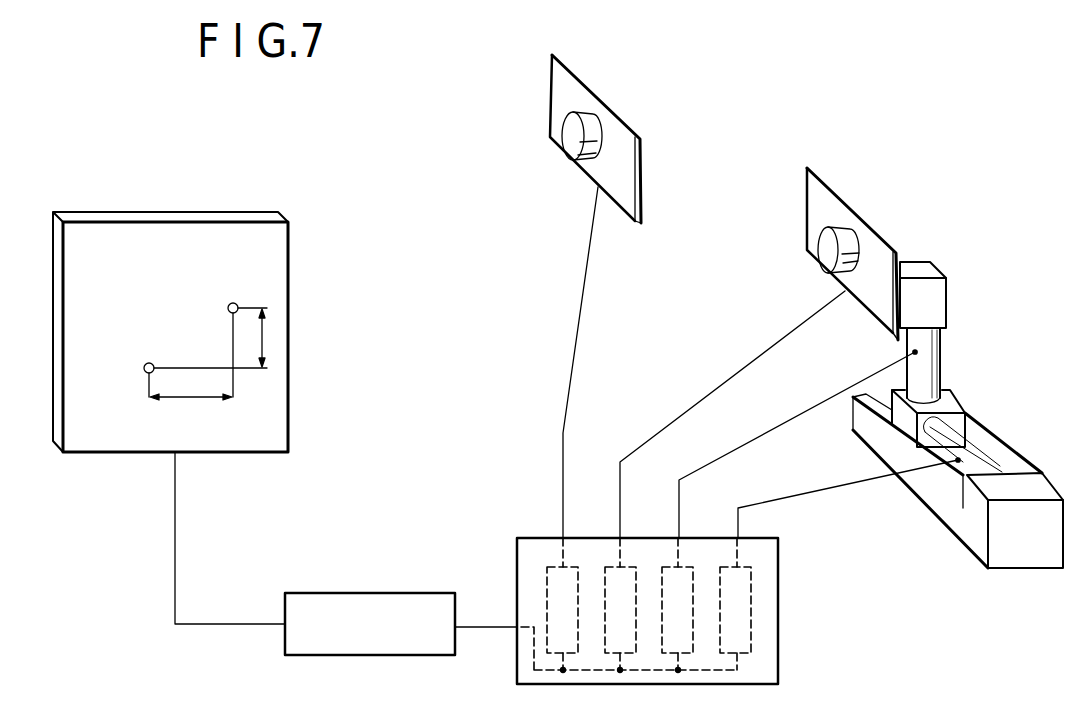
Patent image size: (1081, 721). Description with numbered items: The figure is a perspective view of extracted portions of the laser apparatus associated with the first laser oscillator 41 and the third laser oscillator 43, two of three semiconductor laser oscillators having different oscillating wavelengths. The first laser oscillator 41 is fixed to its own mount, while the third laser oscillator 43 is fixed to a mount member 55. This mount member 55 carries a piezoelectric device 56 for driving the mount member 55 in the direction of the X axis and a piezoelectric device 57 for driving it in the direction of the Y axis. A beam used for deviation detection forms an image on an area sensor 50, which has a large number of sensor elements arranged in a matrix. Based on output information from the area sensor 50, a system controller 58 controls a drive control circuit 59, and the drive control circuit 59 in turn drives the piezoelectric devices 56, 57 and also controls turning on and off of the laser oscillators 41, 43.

The first laser oscillator 41 is at (570, 128).
The third laser oscillator 43 is at (828, 257).
The area sensor 50 is at (250, 212).
The mount member 55 is at (920, 262).
The piezoelectric device 56 is at (980, 450).
The piezoelectric device 57 is at (937, 371).
The system controller 58 is at (392, 593).
The drive control circuit 59 is at (781, 633).